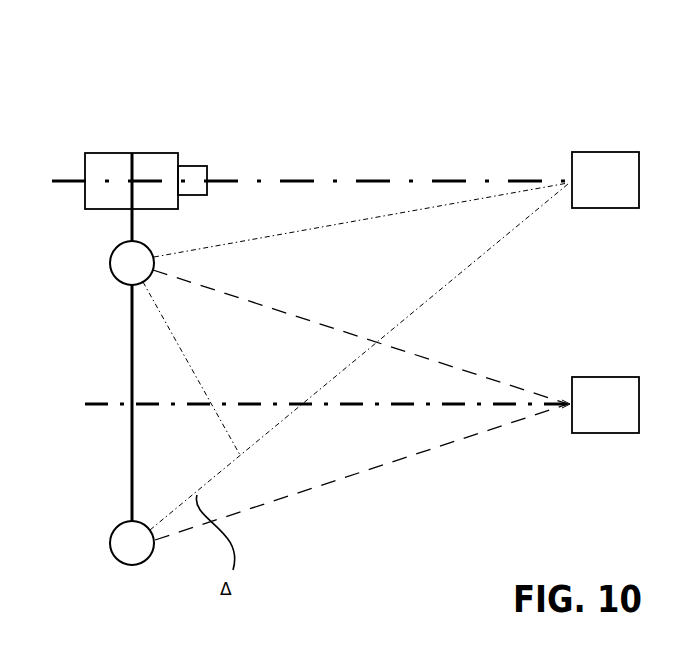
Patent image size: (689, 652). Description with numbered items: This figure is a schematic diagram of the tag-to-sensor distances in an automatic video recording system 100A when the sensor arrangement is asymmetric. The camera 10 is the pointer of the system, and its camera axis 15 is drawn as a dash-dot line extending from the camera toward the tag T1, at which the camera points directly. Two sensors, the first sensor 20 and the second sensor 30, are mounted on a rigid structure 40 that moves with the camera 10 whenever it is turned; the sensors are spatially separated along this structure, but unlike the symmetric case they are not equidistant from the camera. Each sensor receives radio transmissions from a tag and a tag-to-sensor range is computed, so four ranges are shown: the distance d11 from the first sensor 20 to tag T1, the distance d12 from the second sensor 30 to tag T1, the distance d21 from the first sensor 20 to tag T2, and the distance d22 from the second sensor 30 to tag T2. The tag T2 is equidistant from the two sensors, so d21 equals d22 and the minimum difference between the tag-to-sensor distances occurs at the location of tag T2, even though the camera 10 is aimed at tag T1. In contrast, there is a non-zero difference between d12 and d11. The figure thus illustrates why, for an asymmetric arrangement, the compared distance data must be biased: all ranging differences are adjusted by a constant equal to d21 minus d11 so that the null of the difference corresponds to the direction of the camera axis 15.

The automatic video recording system 100A is at (343, 80).
The camera 10 is at (110, 153).
The camera axis 15 is at (278, 180).
The right sensor 20 is at (111, 258).
The left sensor 30 is at (110, 530).
The rigid structure 40 is at (130, 427).
The tag T1 is at (605, 180).
The tag T2 is at (605, 405).
The distance from sensor S1 to tag T1 d11 is at (402, 215).
The distance from sensor S1 to tag T2 d21 is at (327, 320).
The distance from sensor S2 to tag T1 d12 is at (495, 248).
The distance from sensor S2 to tag T2 d22 is at (293, 497).